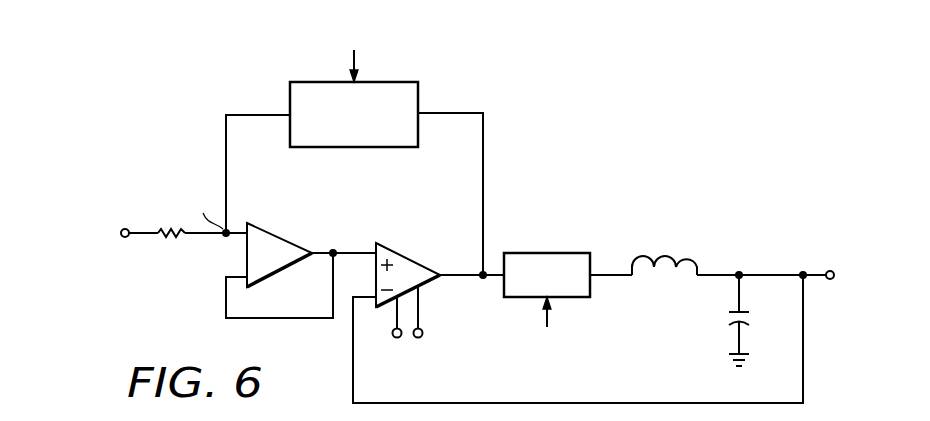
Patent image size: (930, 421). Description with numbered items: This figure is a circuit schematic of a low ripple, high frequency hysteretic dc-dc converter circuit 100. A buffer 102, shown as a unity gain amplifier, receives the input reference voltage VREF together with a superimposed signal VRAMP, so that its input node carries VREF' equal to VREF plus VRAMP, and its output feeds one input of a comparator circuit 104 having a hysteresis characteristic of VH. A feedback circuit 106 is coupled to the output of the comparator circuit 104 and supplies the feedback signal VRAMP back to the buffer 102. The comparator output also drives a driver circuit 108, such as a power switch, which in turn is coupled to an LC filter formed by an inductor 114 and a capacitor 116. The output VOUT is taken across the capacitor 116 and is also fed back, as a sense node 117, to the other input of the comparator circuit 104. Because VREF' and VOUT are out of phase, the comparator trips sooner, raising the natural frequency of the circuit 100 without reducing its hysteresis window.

The hysteretic dc-dc converter circuit 100 is at (631, 149).
The buffer 102 is at (278, 235).
The comparator circuit 104 is at (412, 255).
The feedback circuit 106 is at (353, 148).
The driver circuit 108 is at (547, 253).
The inductor 114 is at (672, 256).
The capacitor 116 is at (728, 320).
The sense node 117 is at (352, 361).